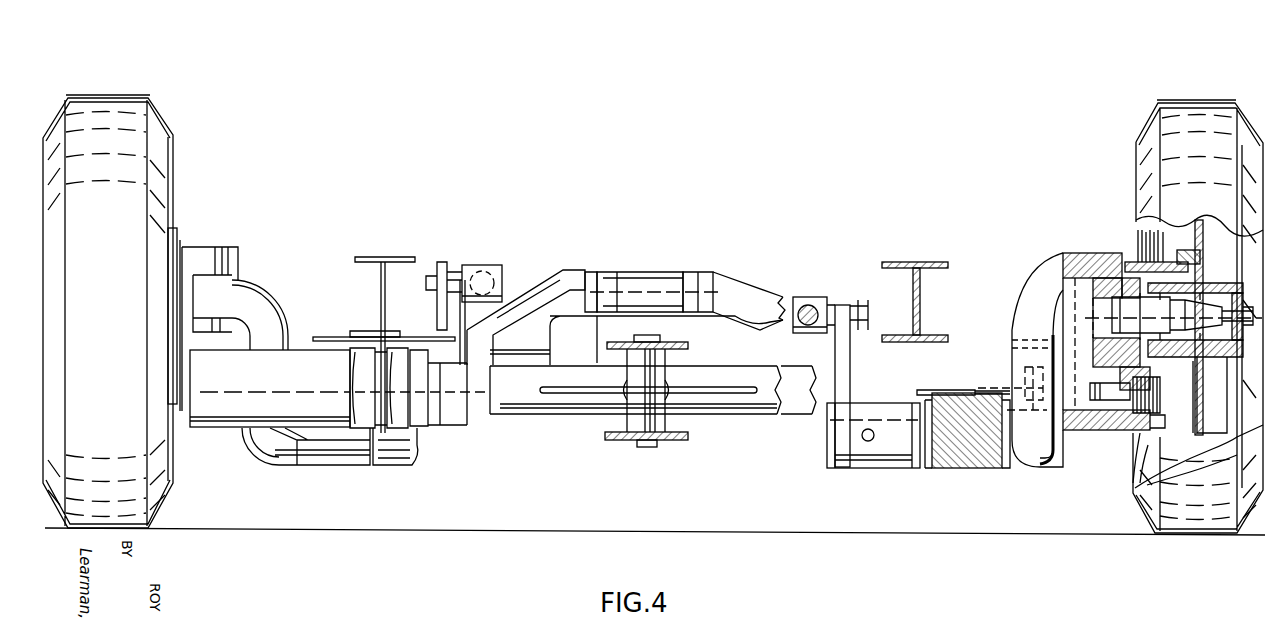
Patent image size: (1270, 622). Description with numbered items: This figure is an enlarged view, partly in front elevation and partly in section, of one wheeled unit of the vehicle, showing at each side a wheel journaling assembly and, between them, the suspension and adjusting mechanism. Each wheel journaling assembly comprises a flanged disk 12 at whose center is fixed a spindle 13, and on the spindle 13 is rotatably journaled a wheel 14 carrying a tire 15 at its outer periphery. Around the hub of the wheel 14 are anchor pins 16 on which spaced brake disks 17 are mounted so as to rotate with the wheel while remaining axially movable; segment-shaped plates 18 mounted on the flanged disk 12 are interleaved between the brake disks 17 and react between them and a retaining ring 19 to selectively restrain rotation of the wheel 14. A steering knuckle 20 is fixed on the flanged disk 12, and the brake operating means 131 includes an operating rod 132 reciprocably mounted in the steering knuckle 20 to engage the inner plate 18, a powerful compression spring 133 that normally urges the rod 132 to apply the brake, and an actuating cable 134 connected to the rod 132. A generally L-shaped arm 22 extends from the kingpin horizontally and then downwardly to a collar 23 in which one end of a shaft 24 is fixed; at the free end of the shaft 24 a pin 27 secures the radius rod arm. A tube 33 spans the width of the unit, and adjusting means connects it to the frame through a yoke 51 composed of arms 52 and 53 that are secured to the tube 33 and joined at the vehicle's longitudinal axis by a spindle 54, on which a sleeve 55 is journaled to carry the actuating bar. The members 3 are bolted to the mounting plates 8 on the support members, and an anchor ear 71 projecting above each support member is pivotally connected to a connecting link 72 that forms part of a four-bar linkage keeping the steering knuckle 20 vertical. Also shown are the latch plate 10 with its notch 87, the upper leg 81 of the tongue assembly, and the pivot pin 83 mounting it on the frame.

The members 3 is at (393, 258).
The mounting plate 8 is at (430, 338).
The latch plate 10 is at (708, 395).
The flanged disk 12 is at (1110, 260).
The spindle 13 is at (1075, 310).
The wheel 14 is at (1205, 240).
The tire 15 is at (160, 512).
The anchor pins 16 is at (1168, 262).
The brake disks 17 is at (1150, 240).
The segment-shaped plates 18 is at (1185, 385).
The retaining ring 19 is at (1165, 400).
The steering knuckle 20 is at (1063, 258).
The L-shaped arm 22 is at (1035, 300).
The collar 23 is at (852, 360).
The shaft 24 is at (870, 470).
The pin 27 is at (874, 434).
The tube 33 is at (762, 412).
The yoke 51 is at (555, 254).
The arm 52 is at (497, 325).
The arm 53 is at (770, 290).
The spindle 54 is at (712, 285).
The sleeve 55 is at (668, 272).
The anchor ear 71 is at (445, 276).
The connecting link 72 is at (485, 265).
The upper leg 81 is at (688, 345).
The pivot pin 83 is at (650, 447).
The notch 87 is at (607, 395).
The brake operating means 131 is at (1084, 440).
The operating rod 132 is at (1090, 428).
The compression spring 133 is at (1025, 340).
The actuating cable 134 is at (936, 390).